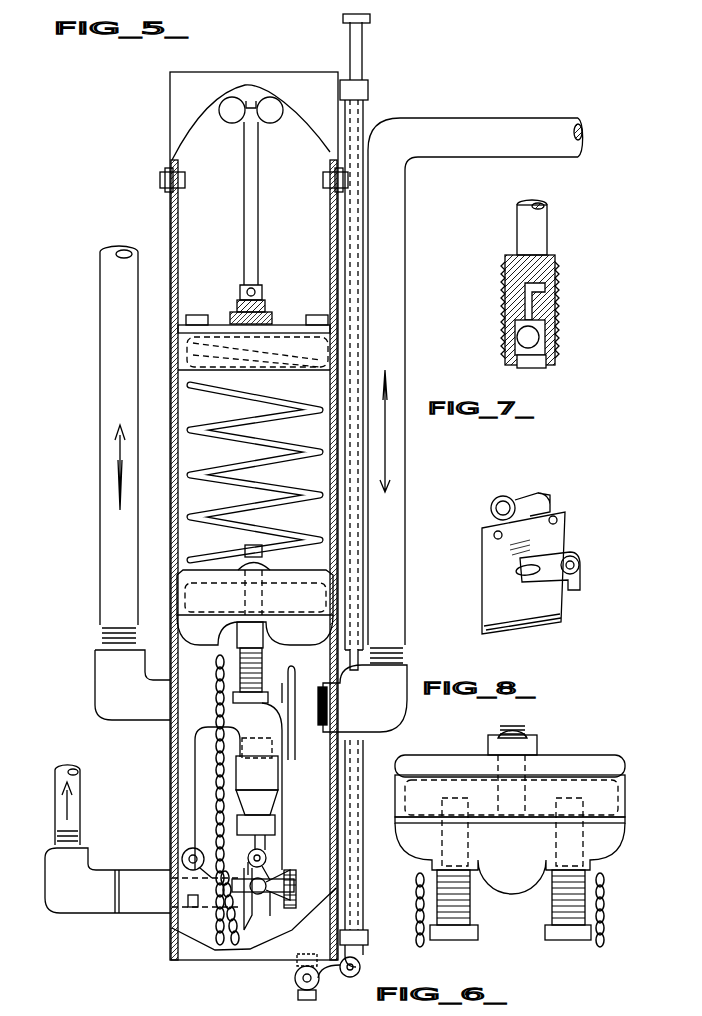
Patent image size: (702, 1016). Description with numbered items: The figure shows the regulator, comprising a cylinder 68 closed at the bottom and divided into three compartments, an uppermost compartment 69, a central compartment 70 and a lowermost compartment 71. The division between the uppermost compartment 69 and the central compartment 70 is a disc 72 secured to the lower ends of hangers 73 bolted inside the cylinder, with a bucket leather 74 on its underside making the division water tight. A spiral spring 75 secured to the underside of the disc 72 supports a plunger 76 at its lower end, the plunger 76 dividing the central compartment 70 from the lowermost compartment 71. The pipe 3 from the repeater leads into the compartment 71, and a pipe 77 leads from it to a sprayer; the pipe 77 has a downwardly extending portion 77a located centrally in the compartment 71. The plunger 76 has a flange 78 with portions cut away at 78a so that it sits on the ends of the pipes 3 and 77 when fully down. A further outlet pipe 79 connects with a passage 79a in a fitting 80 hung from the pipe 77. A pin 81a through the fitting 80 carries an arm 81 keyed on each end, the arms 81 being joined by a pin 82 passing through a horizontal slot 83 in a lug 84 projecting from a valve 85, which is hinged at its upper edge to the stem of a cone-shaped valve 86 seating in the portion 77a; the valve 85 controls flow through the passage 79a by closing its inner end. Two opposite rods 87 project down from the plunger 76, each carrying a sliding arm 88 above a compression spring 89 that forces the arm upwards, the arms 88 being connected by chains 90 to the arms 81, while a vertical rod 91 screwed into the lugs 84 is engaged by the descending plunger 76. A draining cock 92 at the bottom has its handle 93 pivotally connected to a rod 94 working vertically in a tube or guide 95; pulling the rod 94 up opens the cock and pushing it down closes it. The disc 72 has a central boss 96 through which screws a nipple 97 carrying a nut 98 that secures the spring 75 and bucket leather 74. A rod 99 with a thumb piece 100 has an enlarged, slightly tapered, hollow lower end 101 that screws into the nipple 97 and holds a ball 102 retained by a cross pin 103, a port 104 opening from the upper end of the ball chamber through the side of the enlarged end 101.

In FIG. 5, the pipe 3 is at (491, 128).
In FIG. 5, the cylinder 68 is at (178, 410).
In FIG. 5, the uppermost compartment 69 is at (254, 516).
In FIG. 5, the central compartment 70 is at (322, 432).
In FIG. 5, the lowermost compartment 71 is at (330, 786).
In FIG. 5, the disc 72 is at (206, 328).
In FIG. 5, the hangers 73 is at (172, 216).
In FIG. 5, the bucket leather 74 is at (193, 360).
In FIG. 5, the spiral spring 75 is at (215, 482).
In FIG. 5, the plunger 76 is at (313, 598).
In FIG. 6, the plunger 76 is at (520, 780).
In FIG. 5, the pipe 77 is at (108, 598).
In FIG. 5, the downwardly extending portion 77a is at (236, 772).
In FIG. 5, the flange 78 is at (196, 628).
In FIG. 6, the flange 78 is at (540, 838).
In FIG. 5, the cut-away portions 78a is at (182, 642).
In FIG. 6, the cut-away portions 78a is at (430, 828).
In FIG. 5, the outlet pipe 79 is at (85, 807).
In FIG. 5, the passage 79a is at (206, 915).
In FIG. 5, the fitting 80 is at (182, 836).
In FIG. 5, the arms 81 is at (205, 873).
In FIG. 5, the pin 81a is at (183, 859).
In FIG. 5, the pin 82 is at (263, 880).
In FIG. 5, the horizontal slot 83 is at (270, 890).
In FIG. 8, the horizontal slot 83 is at (540, 576).
In FIG. 5, the lug 84 is at (279, 901).
In FIG. 8, the lug 84 is at (550, 553).
In FIG. 5, the valve 85 is at (252, 870).
In FIG. 8, the valve 85 is at (510, 610).
In FIG. 5, the cone-shaped valve 86 is at (262, 806).
In FIG. 5, the rods 87 is at (240, 603).
In FIG. 6, the rods 87 is at (425, 838).
In FIG. 5, the sliding arms 88 is at (250, 637).
In FIG. 6, the sliding arms 88 is at (415, 870).
In FIG. 6, the compression spring 89 is at (552, 908).
In FIG. 5, the chains 90 is at (216, 802).
In FIG. 6, the chains 90 is at (414, 920).
In FIG. 5, the vertical rod 91 is at (296, 742).
In FIG. 5, the draining cock 92 is at (294, 978).
In FIG. 5, the handle 93 is at (330, 987).
In FIG. 5, the rod 94 is at (365, 45).
In FIG. 5, the tube or guide 95 is at (356, 118).
In FIG. 5, the central boss 96 is at (262, 322).
In FIG. 5, the nipple 97 is at (240, 312).
In FIG. 5, the nut 98 is at (262, 343).
In FIG. 5, the rod 99 is at (258, 196).
In FIG. 7, the rod 99 is at (540, 232).
In FIG. 5, the thumb piece 100 is at (274, 107).
In FIG. 7, the enlarged lower end 101 is at (505, 281).
In FIG. 7, the ball 102 is at (532, 341).
In FIG. 7, the cross pin 103 is at (522, 368).
In FIG. 7, the port 104 is at (530, 306).